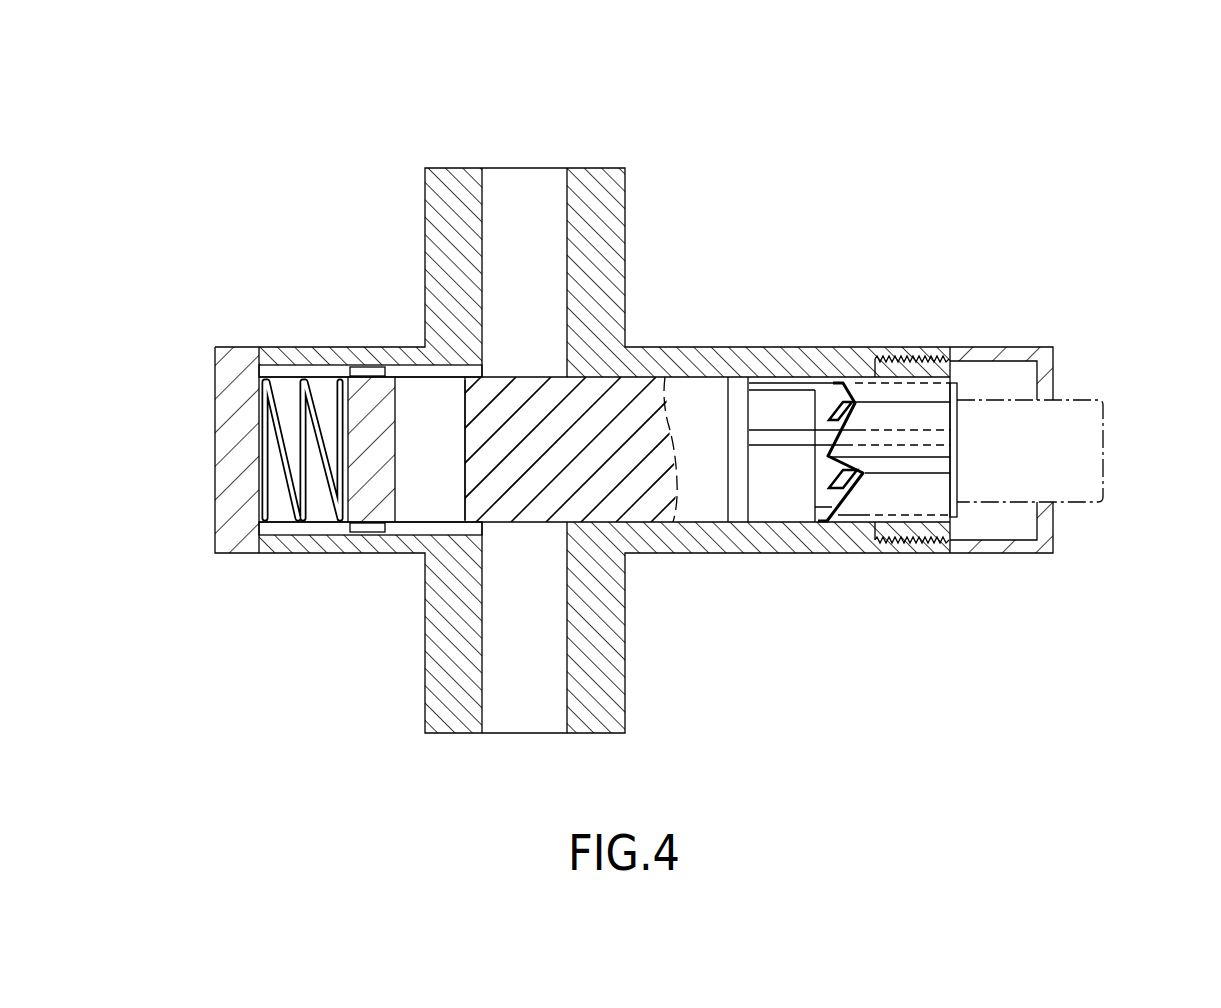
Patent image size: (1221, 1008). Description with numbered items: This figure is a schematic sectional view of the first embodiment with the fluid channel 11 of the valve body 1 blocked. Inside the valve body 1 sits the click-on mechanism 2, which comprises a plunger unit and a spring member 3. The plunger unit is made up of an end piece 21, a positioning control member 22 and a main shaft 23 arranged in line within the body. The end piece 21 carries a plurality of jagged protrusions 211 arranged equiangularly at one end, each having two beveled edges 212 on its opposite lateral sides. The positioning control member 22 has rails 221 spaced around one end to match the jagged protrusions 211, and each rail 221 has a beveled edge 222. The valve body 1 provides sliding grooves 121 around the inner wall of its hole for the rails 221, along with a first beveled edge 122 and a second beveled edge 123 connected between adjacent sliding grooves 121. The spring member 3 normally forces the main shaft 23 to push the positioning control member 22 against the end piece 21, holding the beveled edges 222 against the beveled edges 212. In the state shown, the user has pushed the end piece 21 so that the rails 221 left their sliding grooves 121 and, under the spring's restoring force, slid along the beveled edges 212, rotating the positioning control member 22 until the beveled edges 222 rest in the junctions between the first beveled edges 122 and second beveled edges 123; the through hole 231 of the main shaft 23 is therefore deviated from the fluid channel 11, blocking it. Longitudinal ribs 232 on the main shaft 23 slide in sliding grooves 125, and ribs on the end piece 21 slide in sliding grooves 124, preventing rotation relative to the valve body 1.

The valve body 1 is at (610, 185).
The fluid channel 11 is at (528, 185).
The click-on mechanism 2 is at (540, 360).
The spring member 3 is at (278, 422).
The end piece 21 is at (1067, 457).
The positioning control member 22 is at (777, 407).
The main shaft 23 is at (495, 403).
The sliding grooves 121 is at (913, 395).
The first beveled edge 122 is at (828, 453).
The second beveled edge 123 is at (827, 410).
The sliding grooves 124 is at (953, 387).
The sliding grooves 125 is at (280, 370).
The jagged protrusions 211 is at (818, 435).
The beveled edges 212 is at (877, 382).
The rails 221 is at (763, 437).
The beveled edge 222 is at (848, 437).
The through hole 231 is at (415, 407).
The longitudinal ribs 232 is at (368, 372).